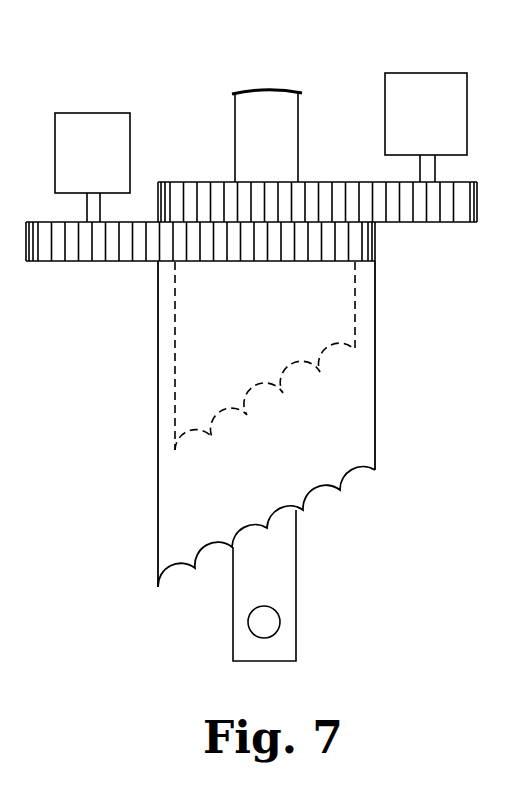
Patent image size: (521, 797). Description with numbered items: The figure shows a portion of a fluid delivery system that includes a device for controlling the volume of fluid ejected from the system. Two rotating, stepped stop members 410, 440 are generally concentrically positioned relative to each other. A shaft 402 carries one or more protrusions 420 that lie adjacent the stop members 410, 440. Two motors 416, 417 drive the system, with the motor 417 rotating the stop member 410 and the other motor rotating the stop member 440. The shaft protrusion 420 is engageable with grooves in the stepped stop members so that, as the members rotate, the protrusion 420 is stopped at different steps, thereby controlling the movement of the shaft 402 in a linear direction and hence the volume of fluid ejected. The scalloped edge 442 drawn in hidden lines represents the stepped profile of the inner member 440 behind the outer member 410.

The shaft 402 is at (280, 592).
The rotating stepped stop member 410 is at (375, 407).
The motor 416 is at (423, 73).
The motor 417 is at (90, 113).
The protrusion 420 is at (280, 630).
The rotating stepped stop member 440 is at (327, 302).
The hidden scalloped edge 442 is at (327, 353).